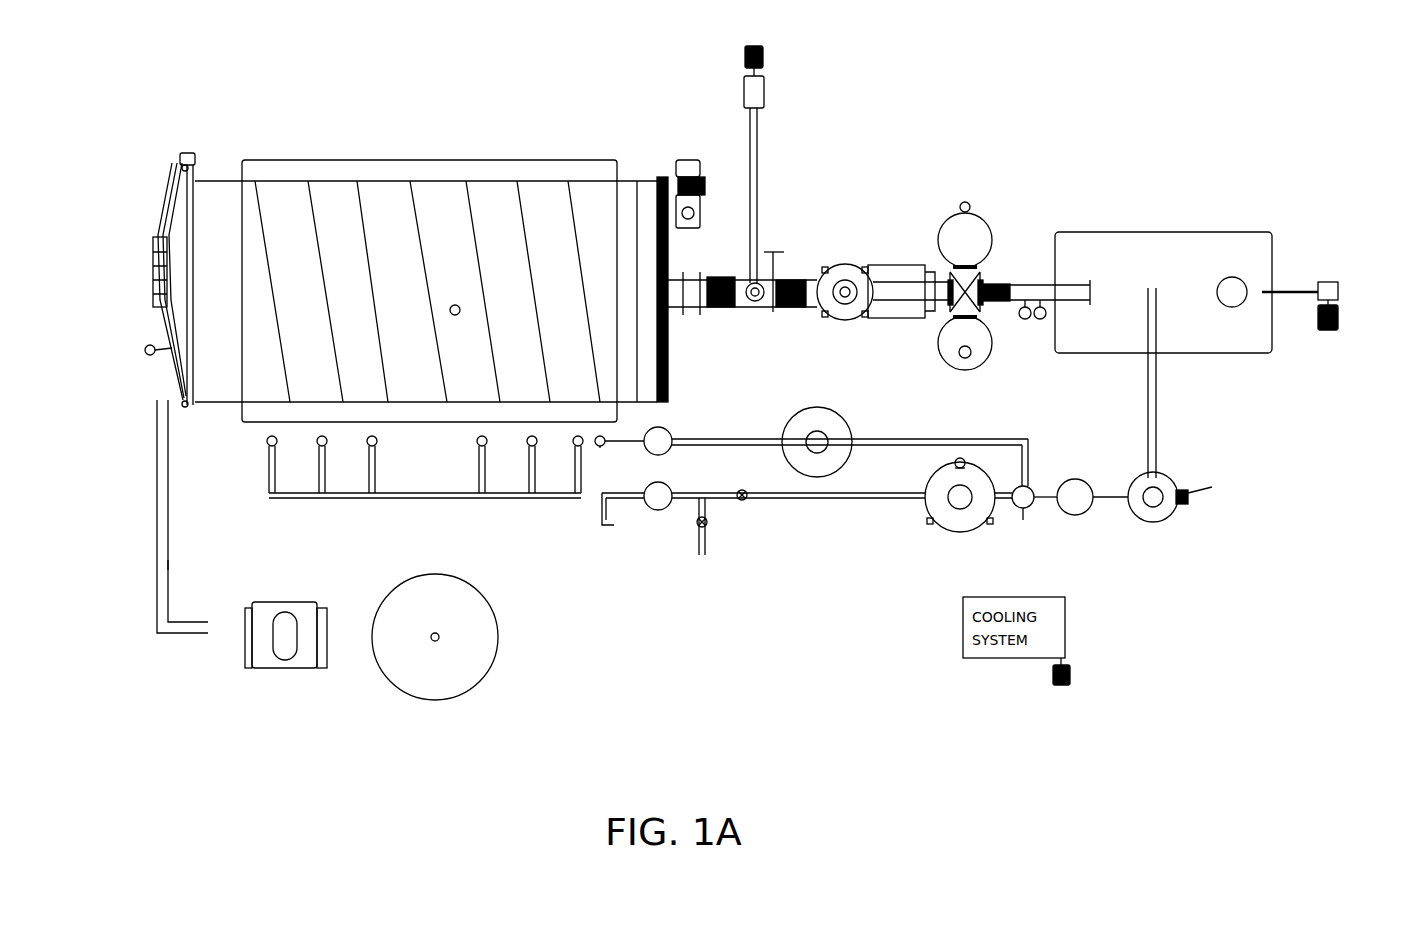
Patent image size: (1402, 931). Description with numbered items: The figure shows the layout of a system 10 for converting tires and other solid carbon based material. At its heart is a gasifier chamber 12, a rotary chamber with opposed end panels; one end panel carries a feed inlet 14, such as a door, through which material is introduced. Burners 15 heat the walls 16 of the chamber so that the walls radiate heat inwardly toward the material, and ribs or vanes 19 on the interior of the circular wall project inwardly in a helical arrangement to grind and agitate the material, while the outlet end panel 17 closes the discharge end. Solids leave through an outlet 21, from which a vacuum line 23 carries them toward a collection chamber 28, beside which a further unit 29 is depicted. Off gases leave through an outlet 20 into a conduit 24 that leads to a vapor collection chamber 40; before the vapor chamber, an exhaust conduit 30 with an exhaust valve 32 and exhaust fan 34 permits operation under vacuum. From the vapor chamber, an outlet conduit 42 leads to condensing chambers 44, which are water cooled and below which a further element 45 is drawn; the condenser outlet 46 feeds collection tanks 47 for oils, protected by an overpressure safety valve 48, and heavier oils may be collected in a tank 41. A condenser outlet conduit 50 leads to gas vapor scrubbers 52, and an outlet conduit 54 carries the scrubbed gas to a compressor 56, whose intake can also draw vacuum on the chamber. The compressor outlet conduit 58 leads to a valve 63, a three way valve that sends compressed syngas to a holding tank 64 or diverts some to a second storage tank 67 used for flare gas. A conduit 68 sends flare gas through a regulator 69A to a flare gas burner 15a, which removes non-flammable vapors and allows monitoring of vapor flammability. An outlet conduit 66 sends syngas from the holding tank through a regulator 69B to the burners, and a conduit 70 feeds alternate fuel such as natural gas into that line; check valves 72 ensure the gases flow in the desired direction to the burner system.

The system 10 is at (1124, 170).
The gasifier chamber 12 is at (476, 142).
The feed inlet 14 is at (154, 263).
The heaters or burners 15 is at (390, 180).
The flare gas burner 15a is at (598, 448).
The walls 16 is at (218, 158).
The outlet end panel 17 is at (676, 325).
The ribs or vanes 19 is at (427, 291).
The outlet 20 is at (670, 275).
The outlet 21 is at (180, 391).
The vacuum line 23 is at (175, 564).
The conduit 24 is at (790, 312).
The collection chamber 28 is at (435, 637).
The filter unit 29 is at (270, 635).
The exhaust conduit 30 is at (750, 235).
The exhaust valve 32 is at (760, 219).
The exhaust fan 34 is at (765, 92).
The vapor collection chamber 40 is at (848, 322).
The tank 41 is at (895, 270).
The outlet conduit 42 is at (907, 318).
The condensing chambers 44 is at (965, 225).
The drain valve 45 is at (965, 318).
The outlet 46 is at (1046, 285).
The collection tanks 47 is at (1258, 229).
The overpressure safety valve 48 is at (1342, 317).
The outlet conduit 50 is at (1158, 411).
The gas vapor scrubbers 52 is at (1190, 490).
The outlet conduit 54 is at (1110, 494).
The compressor 56 is at (1075, 497).
The compressor outlet conduit 58 is at (1038, 486).
The valve 63 is at (1028, 510).
The holding tank 64 is at (976, 480).
The outlet conduit 66 is at (807, 498).
The second storage tank 67 is at (838, 420).
The conduit 68 is at (733, 432).
The regulator 69A is at (668, 433).
The regulator 69B is at (663, 490).
The conduit 70 is at (702, 556).
The check valves 72 is at (742, 503).